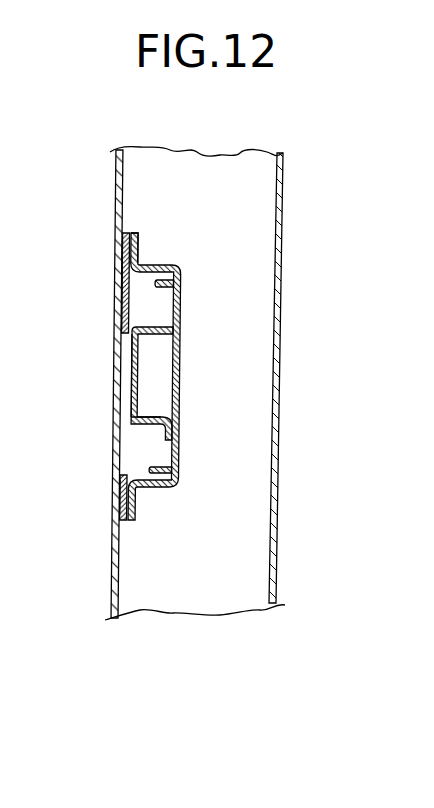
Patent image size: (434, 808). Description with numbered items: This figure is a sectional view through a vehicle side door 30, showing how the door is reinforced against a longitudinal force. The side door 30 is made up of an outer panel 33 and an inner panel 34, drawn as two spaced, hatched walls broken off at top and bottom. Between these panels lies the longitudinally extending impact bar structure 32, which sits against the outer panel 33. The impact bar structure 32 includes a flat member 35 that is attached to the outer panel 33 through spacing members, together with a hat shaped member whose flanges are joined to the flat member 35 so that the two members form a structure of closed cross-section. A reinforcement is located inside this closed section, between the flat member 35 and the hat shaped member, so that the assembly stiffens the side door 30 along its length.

The side door 30 is at (207, 401).
The impact bar structure 32 is at (234, 376).
The outer panel 33 is at (112, 594).
The inner panel 34 is at (277, 558).
The flat member 35 is at (130, 429).